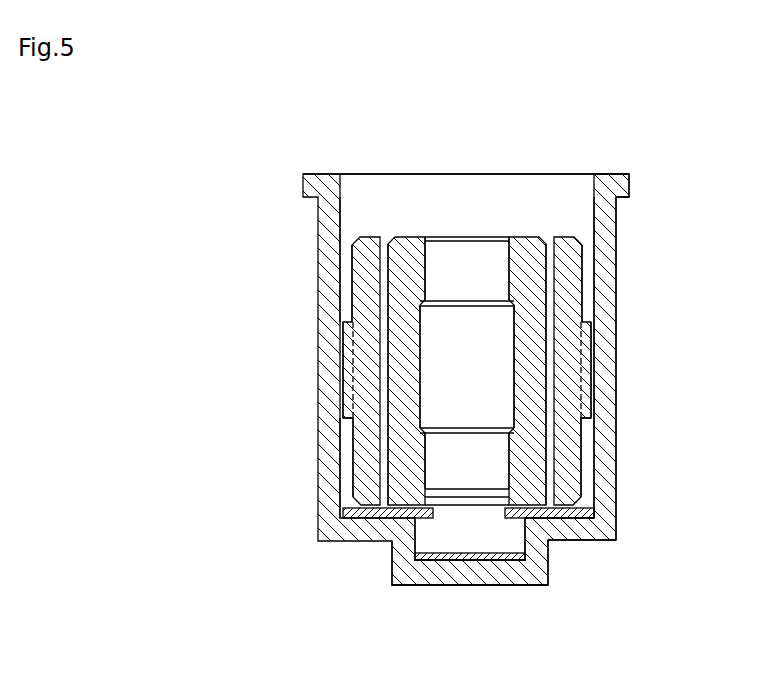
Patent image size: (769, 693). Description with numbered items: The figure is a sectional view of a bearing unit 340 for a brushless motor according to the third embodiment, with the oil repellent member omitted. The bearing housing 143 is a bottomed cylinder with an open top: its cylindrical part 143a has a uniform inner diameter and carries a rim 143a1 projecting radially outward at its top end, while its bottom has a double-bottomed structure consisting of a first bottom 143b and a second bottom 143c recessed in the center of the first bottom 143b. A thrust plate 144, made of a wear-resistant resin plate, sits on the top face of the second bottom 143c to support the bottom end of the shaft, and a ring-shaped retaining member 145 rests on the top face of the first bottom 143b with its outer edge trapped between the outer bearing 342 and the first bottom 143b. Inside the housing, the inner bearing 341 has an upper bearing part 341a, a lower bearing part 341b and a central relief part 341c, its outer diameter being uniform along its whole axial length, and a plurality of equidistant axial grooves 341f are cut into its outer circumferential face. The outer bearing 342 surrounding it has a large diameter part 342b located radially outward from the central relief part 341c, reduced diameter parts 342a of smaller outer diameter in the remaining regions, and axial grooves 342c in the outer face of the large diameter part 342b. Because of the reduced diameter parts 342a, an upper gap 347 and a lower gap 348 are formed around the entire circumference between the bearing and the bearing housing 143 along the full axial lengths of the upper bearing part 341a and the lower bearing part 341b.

The bearing unit 340 is at (590, 141).
The bearing housing 143 is at (313, 248).
The cylindrical part 143a is at (613, 255).
The rim 143a1 is at (628, 183).
The first bottom 143b is at (577, 536).
The second bottom 143c is at (498, 576).
The thrust plate 144 is at (392, 556).
The retaining member 145 is at (347, 509).
The inner bearing 341 is at (524, 233).
The upper bearing part 341a is at (466, 262).
The lower bearing part 341b is at (467, 470).
The central relief part 341c is at (478, 349).
The grooves 341f is at (547, 377).
The outer bearing 342 is at (566, 233).
The reduced diameter parts 342a is at (368, 282).
The large diameter part 342b is at (368, 358).
The grooves 342c is at (340, 378).
The upper gap 347 is at (343, 296).
The lower gap 348 is at (345, 480).